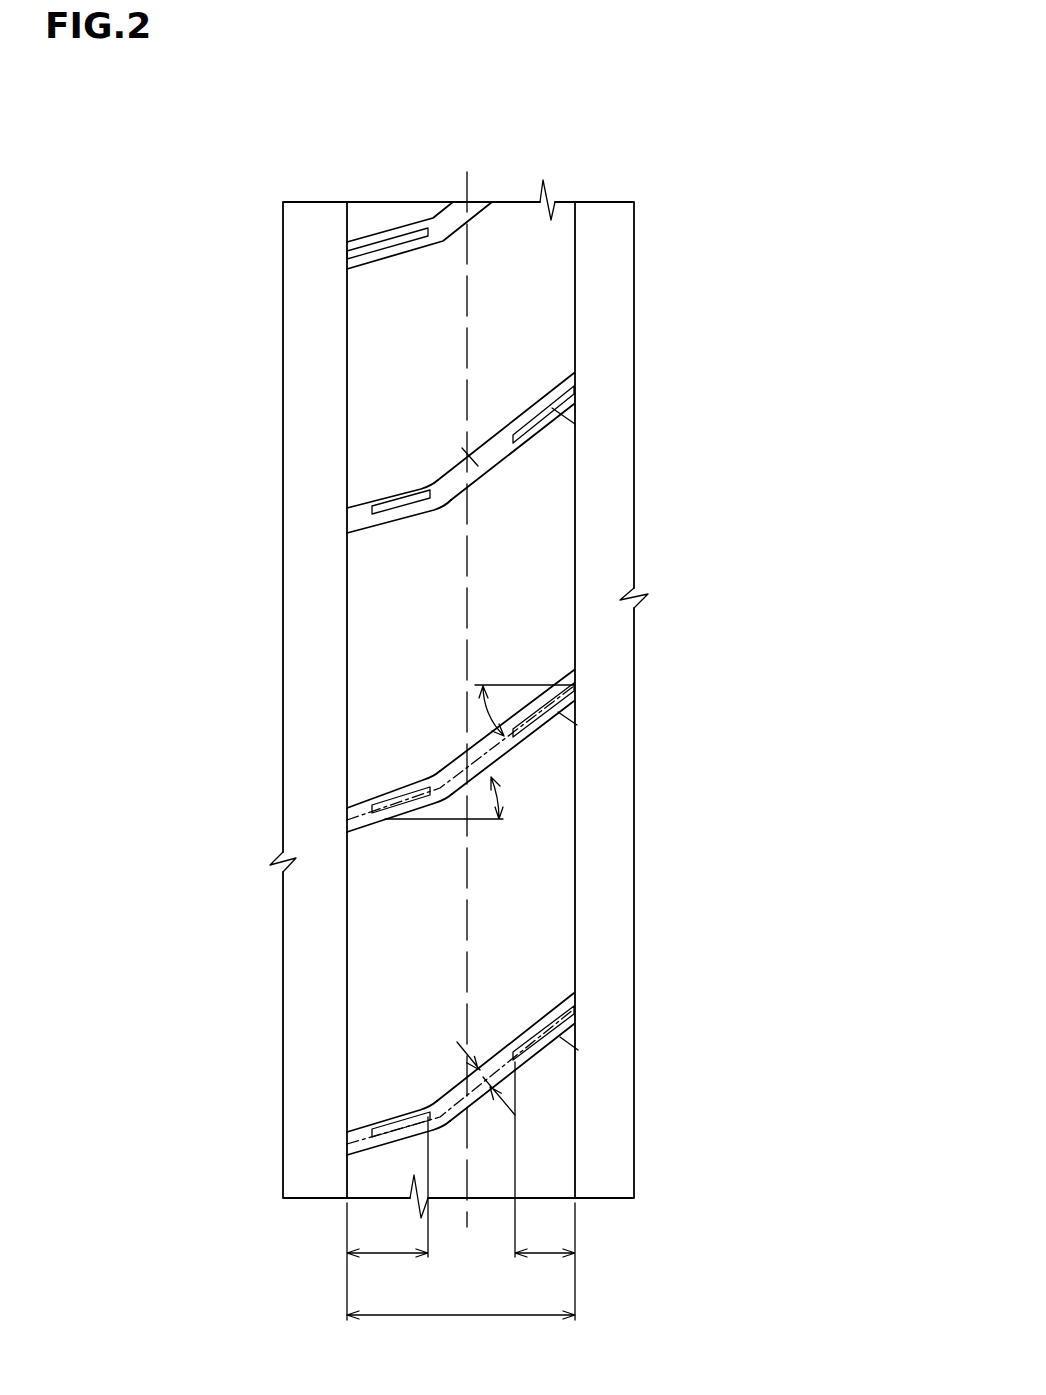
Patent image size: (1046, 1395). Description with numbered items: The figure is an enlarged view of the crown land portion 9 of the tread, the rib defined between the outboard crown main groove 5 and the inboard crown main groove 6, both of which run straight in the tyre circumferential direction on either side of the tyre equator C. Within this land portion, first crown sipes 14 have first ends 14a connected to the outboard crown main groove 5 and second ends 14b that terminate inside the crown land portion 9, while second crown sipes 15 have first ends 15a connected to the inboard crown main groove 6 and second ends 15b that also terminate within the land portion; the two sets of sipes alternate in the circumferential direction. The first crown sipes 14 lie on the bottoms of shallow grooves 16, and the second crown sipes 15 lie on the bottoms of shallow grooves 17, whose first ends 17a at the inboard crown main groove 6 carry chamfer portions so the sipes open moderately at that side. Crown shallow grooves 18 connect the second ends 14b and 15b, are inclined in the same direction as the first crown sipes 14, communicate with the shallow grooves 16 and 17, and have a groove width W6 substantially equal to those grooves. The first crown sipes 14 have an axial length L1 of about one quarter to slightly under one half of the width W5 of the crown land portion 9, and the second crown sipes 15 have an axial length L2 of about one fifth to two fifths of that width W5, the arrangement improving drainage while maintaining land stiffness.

The outboard crown main groove 5 is at (317, 245).
The inboard crown main groove 6 is at (599, 250).
The crown land portion 9 is at (508, 265).
The tyre equator C is at (464, 685).
The first crown sipes 14 is at (383, 518).
The first ends of the first crown sipes 14a is at (335, 527).
The second ends of the first crown sipes 14b is at (445, 503).
The second crown sipes 15 is at (557, 418).
The first ends of the second crown sipes 15a is at (587, 393).
The second ends of the second crown sipes 15b is at (501, 442).
The shallow grooves 16 is at (383, 498).
The shallow grooves 17 is at (552, 408).
The first ends of the shallow grooves 17a is at (567, 708).
The crown shallow grooves 18 is at (478, 463).
The width of the crown land portion W5 is at (461, 1331).
The groove width of the crown shallow grooves W6 is at (493, 1062).
The length of the first crown sipes L1 is at (387, 1218).
The length of the second crown sipes L2 is at (545, 1191).